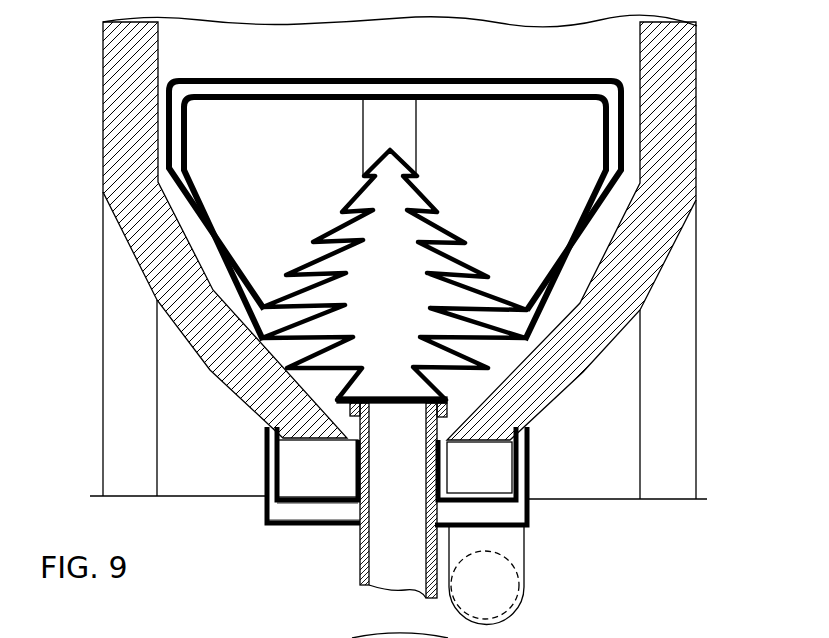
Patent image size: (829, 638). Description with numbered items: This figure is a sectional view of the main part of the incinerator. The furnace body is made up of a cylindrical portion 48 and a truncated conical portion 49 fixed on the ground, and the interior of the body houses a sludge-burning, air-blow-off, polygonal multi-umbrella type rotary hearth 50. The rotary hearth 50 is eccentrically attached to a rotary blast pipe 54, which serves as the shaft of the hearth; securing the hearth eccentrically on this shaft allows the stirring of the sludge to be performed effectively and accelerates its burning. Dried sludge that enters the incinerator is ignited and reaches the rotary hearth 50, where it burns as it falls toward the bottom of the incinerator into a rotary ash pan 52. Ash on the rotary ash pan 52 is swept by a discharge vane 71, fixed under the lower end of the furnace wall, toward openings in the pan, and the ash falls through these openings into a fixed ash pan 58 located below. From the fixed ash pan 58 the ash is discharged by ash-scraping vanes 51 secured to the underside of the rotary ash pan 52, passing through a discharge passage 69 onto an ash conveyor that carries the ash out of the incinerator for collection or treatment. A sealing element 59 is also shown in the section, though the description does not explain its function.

The cylindrical portion 48 is at (158, 42).
The truncated conical portion 49 is at (577, 373).
The sealing ring 59 is at (269, 92).
The multi-umbrella type rotary hearth 50 is at (415, 202).
The rotary blast pipe 54 is at (357, 565).
The rotary ash pan 52 is at (282, 503).
The discharge vane 71 is at (507, 458).
The discharge passage 69 is at (524, 540).
The fixed ash pan 58 is at (288, 523).
The ash-scraping vanes 51 is at (325, 513).